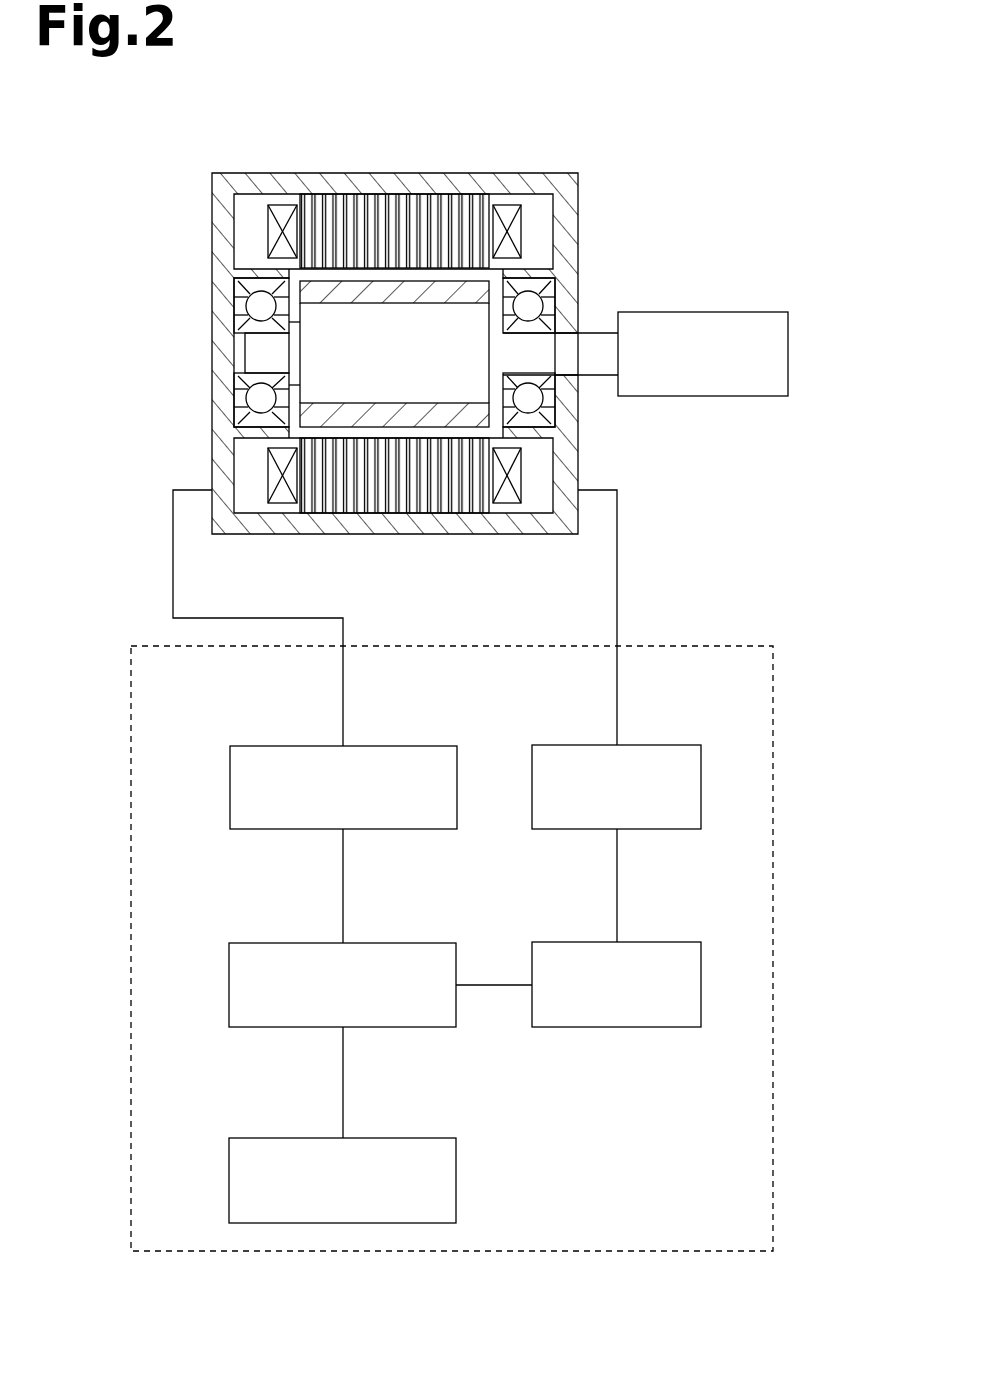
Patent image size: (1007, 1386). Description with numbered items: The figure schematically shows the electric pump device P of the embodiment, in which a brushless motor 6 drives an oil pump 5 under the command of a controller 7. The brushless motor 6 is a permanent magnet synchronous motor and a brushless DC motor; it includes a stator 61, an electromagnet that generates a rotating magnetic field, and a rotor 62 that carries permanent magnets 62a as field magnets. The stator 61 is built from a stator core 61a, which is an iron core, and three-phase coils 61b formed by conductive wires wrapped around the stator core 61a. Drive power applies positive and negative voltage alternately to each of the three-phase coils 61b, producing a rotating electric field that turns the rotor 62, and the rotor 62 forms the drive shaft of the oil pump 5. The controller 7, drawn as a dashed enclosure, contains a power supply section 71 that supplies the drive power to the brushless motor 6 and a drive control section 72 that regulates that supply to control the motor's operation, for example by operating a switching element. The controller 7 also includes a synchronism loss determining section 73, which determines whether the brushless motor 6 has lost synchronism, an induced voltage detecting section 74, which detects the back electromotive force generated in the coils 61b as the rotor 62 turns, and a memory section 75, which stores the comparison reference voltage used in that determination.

The pump unit P is at (675, 132).
The oil pump 5 is at (680, 312).
The brushless motor 6 is at (200, 180).
The stator 61 is at (402, 335).
The stator core 61a is at (362, 196).
The three-phase coils 61b is at (378, 125).
The rotor 62 is at (459, 353).
The permanent magnets 62a is at (387, 304).
The controller 7 is at (452, 979).
The power supply section 71 is at (701, 779).
The drive control section 72 is at (701, 975).
The synchronism loss determining section 73 is at (229, 983).
The induced voltage detecting section 74 is at (230, 787).
The memory section 75 is at (229, 1180).